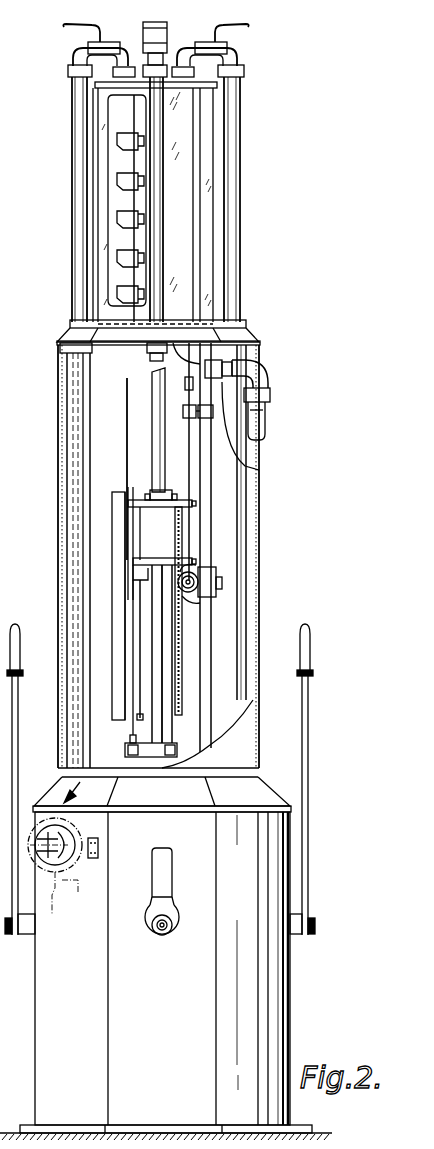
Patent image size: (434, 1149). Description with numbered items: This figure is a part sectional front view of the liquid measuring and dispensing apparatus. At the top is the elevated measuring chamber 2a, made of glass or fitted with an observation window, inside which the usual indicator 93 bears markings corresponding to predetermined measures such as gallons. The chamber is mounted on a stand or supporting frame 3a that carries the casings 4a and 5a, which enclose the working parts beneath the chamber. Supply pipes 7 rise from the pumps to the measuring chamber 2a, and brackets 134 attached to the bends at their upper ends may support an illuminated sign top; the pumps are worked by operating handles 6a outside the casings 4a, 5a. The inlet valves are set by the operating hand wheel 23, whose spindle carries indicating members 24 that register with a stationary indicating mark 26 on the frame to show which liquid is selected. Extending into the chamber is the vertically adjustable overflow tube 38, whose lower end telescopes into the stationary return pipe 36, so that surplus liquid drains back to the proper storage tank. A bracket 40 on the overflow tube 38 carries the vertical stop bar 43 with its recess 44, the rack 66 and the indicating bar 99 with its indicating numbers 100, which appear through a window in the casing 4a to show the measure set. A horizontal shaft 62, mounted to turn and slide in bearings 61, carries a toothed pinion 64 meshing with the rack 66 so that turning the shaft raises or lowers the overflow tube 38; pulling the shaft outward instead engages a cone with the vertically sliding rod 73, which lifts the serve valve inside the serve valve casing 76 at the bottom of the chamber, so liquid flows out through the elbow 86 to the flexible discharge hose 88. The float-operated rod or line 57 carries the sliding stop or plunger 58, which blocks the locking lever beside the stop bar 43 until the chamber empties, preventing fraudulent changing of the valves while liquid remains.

The measuring chamber 2a is at (205, 166).
The stand or supporting frame 3a is at (205, 450).
The casing 4a is at (258, 506).
The casing 5a is at (166, 958).
The operating handle 6a is at (165, 875).
The supply pipe 7 is at (78, 198).
The operating hand wheel 23 is at (55, 880).
The indicating member 24 is at (93, 860).
The stationary indicating mark 26 is at (66, 790).
The stationary return pipe 36 is at (152, 733).
The overflow tube 38 is at (152, 396).
The bracket 40 is at (152, 495).
The vertical stop bar 43 is at (140, 518).
The recess 44 is at (137, 710).
The rod or line 57 is at (127, 415).
The sliding stop or plunger 58 is at (125, 747).
The bearing 61 is at (212, 574).
The horizontal shaft 62 is at (212, 582).
The toothed pinion 64 is at (192, 601).
The rack 66 is at (183, 627).
The vertically sliding rod 73 is at (191, 485).
The serve valve casing 76 is at (80, 58).
The elbow 86 is at (256, 371).
The flexible discharge hose 88 is at (257, 420).
The indicator 93 is at (117, 183).
The indicating bar 99 is at (112, 553).
The indicating numbers 100 is at (112, 608).
The bracket 134 is at (165, 36).